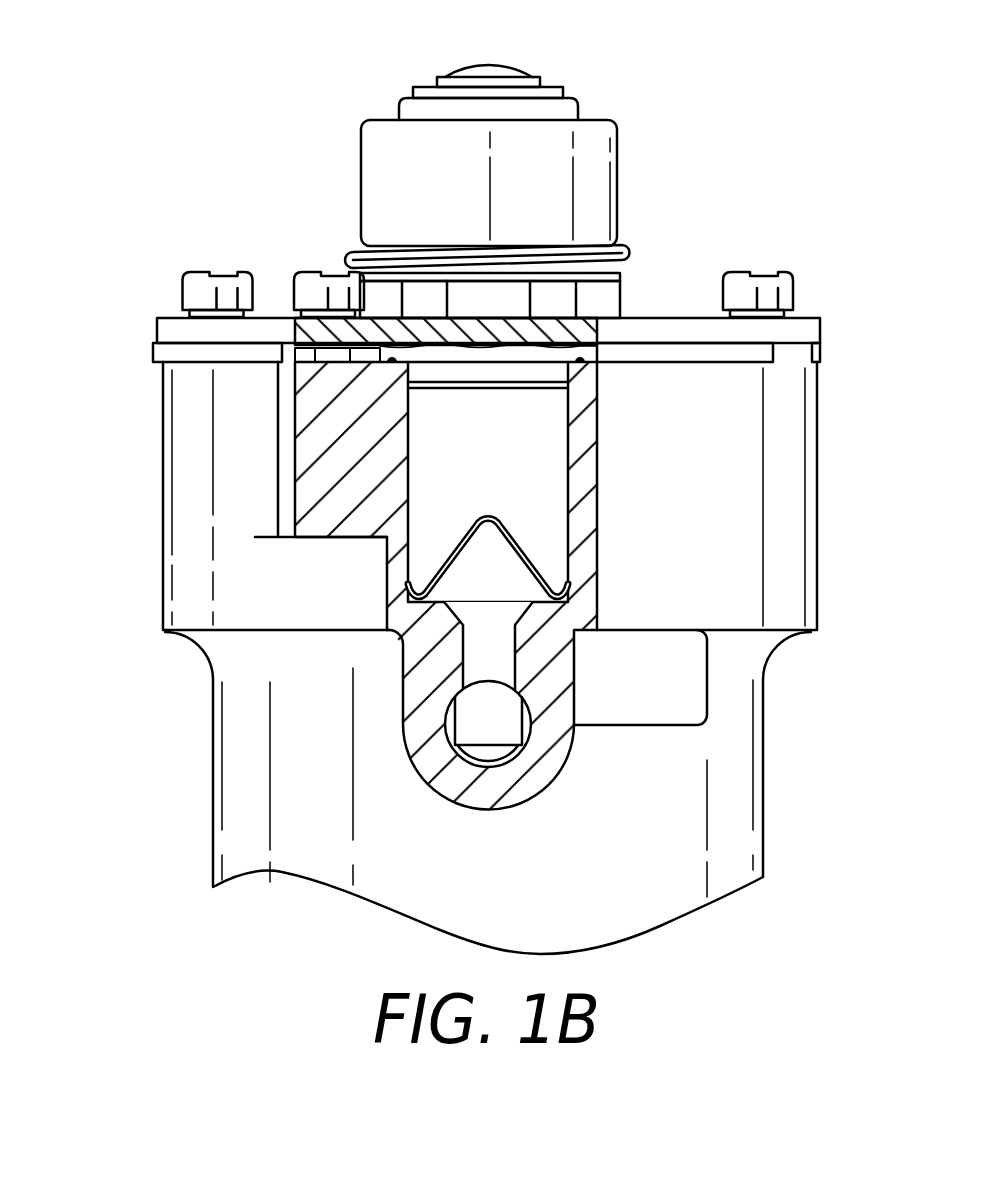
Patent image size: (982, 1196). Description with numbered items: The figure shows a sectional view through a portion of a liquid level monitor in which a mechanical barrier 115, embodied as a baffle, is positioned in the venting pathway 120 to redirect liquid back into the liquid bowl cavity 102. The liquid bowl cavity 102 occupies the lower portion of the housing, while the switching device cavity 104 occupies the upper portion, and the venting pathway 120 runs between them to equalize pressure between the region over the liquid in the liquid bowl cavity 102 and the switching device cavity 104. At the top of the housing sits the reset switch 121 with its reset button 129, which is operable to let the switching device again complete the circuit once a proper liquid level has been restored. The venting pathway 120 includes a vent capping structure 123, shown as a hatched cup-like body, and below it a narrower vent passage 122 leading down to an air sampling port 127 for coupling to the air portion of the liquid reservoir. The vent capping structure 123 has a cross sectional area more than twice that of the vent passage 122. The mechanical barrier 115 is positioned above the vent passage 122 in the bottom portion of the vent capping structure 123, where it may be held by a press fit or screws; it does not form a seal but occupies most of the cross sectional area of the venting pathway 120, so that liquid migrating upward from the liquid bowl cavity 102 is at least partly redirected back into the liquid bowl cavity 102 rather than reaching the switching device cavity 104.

The liquid bowl cavity 102 is at (735, 794).
The switching device cavity 104 is at (193, 488).
The mechanical barrier 115 is at (522, 545).
The venting pathway 120 is at (556, 407).
The reset switch 121 is at (385, 178).
The vent passage 122 is at (502, 659).
The vent capping structure 123 is at (583, 480).
The air sampling port 127 is at (492, 722).
The reset button 129 is at (488, 66).